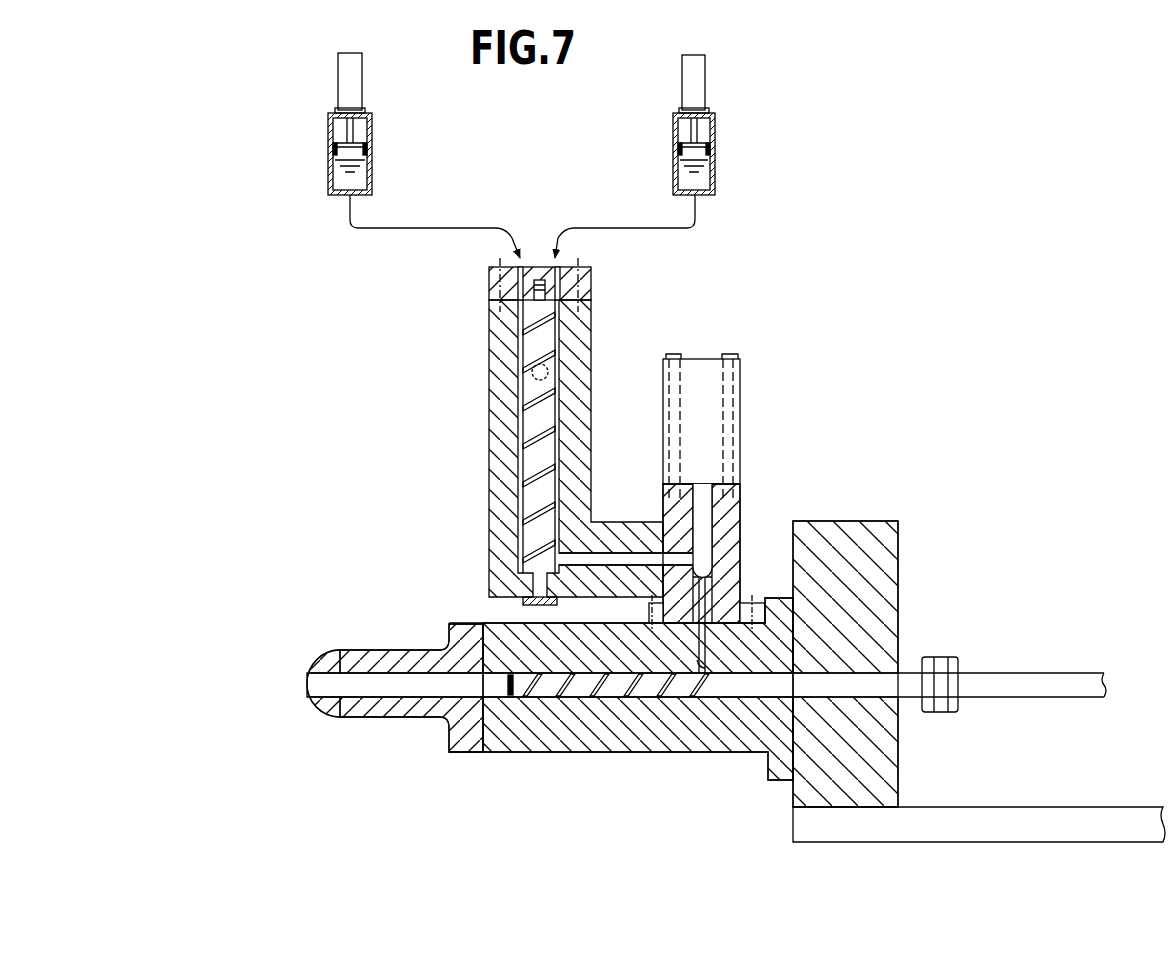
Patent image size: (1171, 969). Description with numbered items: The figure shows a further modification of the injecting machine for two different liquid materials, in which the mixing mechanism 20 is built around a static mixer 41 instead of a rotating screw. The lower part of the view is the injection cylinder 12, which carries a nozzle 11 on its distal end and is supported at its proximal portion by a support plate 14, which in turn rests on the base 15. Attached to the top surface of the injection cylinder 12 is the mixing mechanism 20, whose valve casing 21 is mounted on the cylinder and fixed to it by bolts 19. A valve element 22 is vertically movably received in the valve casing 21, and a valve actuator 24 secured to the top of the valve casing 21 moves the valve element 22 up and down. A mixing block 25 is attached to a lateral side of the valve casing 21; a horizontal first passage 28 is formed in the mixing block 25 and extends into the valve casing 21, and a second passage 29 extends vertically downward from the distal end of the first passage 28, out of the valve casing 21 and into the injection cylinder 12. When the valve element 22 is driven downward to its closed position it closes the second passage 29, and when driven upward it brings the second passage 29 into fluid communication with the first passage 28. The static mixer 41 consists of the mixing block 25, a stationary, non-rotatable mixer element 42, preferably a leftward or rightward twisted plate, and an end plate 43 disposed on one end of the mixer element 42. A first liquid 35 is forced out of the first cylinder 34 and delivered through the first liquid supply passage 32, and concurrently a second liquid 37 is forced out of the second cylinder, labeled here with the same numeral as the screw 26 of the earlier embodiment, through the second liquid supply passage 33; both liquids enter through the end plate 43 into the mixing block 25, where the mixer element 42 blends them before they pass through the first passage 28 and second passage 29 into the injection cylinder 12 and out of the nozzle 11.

The nozzle 11 is at (383, 718).
The injection cylinder 12 is at (555, 752).
The support plate 14 is at (892, 548).
The base 15 is at (1008, 822).
The bolts 19 is at (655, 602).
The mixing mechanism 20 is at (754, 311).
The valve casing 21 is at (724, 553).
The valve element 22 is at (705, 530).
The valve actuator 24 is at (741, 405).
The mixing block 25 is at (497, 543).
The screw 26 is at (714, 136).
The first passage 28 is at (635, 556).
The second passage 29 is at (702, 668).
The first liquid supply passage 32 is at (435, 228).
The second liquid supply passage 33 is at (600, 228).
The first cylinder 34 is at (330, 143).
The first liquid 35 is at (345, 175).
The second liquid 37 is at (714, 172).
The static mixer 41 is at (542, 431).
The mixer element 42 is at (538, 394).
The end plate 43 is at (489, 287).